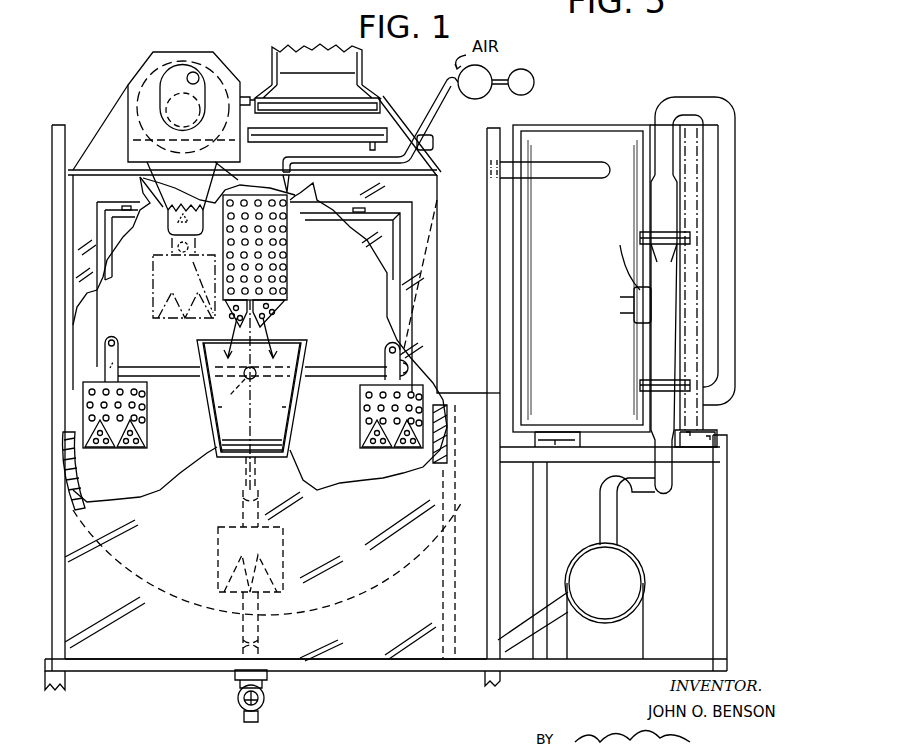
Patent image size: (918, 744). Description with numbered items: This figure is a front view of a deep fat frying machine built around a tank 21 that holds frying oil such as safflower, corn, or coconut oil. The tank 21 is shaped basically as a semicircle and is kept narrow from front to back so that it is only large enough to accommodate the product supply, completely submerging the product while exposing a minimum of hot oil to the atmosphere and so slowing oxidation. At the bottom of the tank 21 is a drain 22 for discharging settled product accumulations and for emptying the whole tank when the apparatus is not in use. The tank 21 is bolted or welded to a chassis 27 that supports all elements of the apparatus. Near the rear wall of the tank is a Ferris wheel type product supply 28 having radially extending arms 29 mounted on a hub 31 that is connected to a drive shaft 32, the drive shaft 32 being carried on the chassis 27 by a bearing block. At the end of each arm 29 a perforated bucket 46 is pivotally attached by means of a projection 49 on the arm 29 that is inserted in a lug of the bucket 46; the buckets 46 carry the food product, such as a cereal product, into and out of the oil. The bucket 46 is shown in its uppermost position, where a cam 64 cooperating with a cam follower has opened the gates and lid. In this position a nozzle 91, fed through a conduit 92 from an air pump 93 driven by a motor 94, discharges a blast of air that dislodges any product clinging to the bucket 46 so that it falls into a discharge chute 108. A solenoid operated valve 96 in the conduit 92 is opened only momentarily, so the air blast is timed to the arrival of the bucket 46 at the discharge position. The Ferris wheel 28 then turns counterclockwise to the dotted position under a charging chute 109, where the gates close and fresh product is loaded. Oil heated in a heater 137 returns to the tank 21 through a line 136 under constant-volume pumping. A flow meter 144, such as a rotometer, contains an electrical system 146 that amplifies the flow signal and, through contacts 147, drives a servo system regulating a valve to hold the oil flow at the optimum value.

The tank 21 is at (78, 480).
The drain 22 is at (244, 715).
The chassis 27 is at (389, 661).
The Ferris wheel type product supply 28 is at (282, 338).
The arms 29 is at (345, 368).
The hub 31 is at (272, 395).
The drive shaft 32 is at (240, 382).
The bucket 46 is at (115, 361).
The projection 49 is at (114, 368).
The cam 64 is at (288, 222).
The nozzle 91 is at (275, 190).
The conduit 92 is at (436, 100).
The air pump 93 is at (490, 66).
The motor 94 is at (530, 72).
The valve 96 is at (434, 143).
The discharge chute 108 is at (212, 405).
The charging chute 109 is at (163, 207).
The line 136 is at (578, 170).
The heater 137 is at (596, 239).
The meter 144 is at (667, 328).
The electrical system 146 is at (636, 240).
The contacts 147 is at (610, 308).